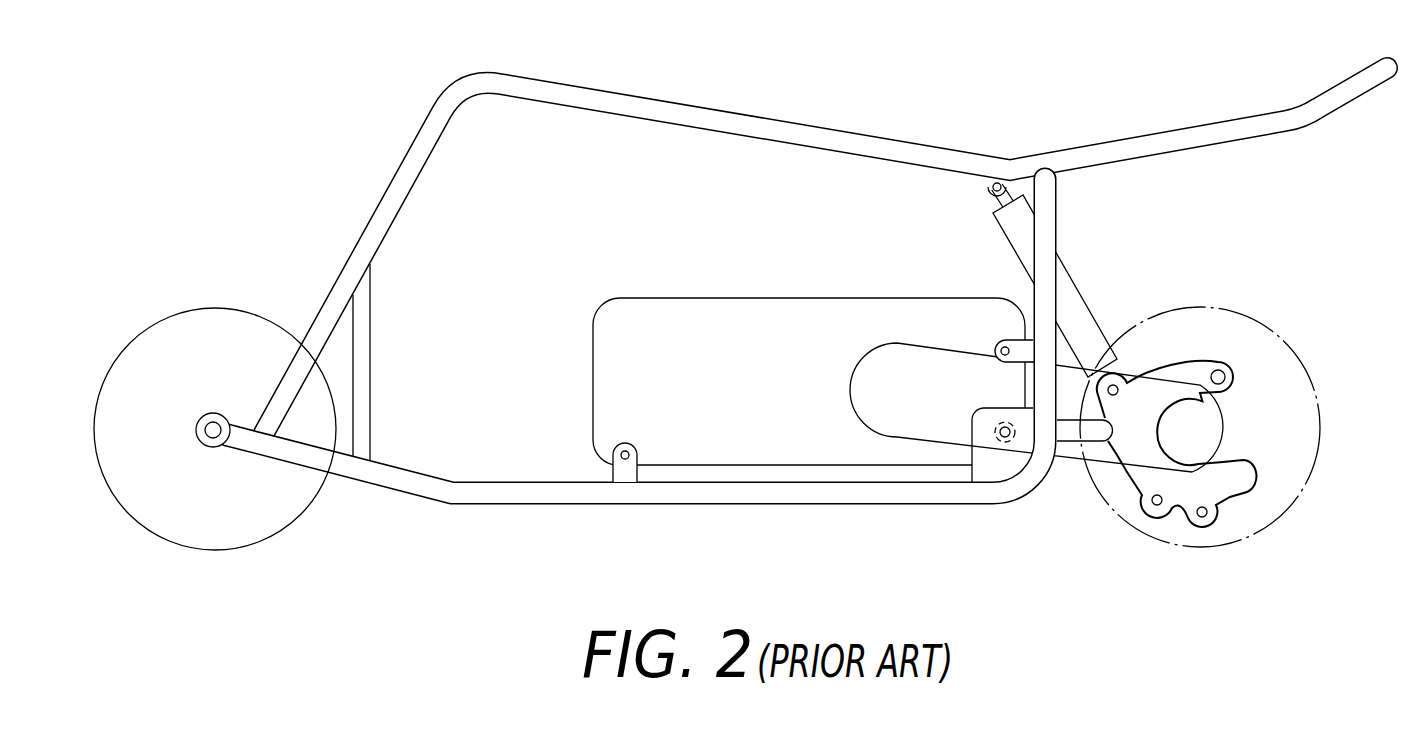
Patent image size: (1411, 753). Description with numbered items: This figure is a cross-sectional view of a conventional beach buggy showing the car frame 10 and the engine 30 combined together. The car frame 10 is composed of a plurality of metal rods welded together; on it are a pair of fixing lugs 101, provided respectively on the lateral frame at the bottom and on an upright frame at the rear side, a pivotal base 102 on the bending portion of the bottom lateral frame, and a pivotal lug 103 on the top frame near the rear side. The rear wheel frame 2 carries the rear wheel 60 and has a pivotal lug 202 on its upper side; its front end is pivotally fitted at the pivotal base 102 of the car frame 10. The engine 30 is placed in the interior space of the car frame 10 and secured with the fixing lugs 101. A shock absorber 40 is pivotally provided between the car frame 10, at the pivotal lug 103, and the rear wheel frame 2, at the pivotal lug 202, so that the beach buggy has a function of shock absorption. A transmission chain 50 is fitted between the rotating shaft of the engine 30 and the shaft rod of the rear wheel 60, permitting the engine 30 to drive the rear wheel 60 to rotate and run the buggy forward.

The car frame 10 is at (668, 113).
The rear wheel bracket 2 is at (1068, 433).
The engine 30 is at (809, 435).
The shock absorber 40 is at (1063, 280).
The transmission chain 50 is at (905, 440).
The rear wheel 60 is at (196, 352).
The fixing lugs 101 is at (1013, 340).
The pivotal base 102 is at (983, 470).
The pivotal lug 103 is at (988, 189).
The pivotal lugs 202 is at (1120, 380).